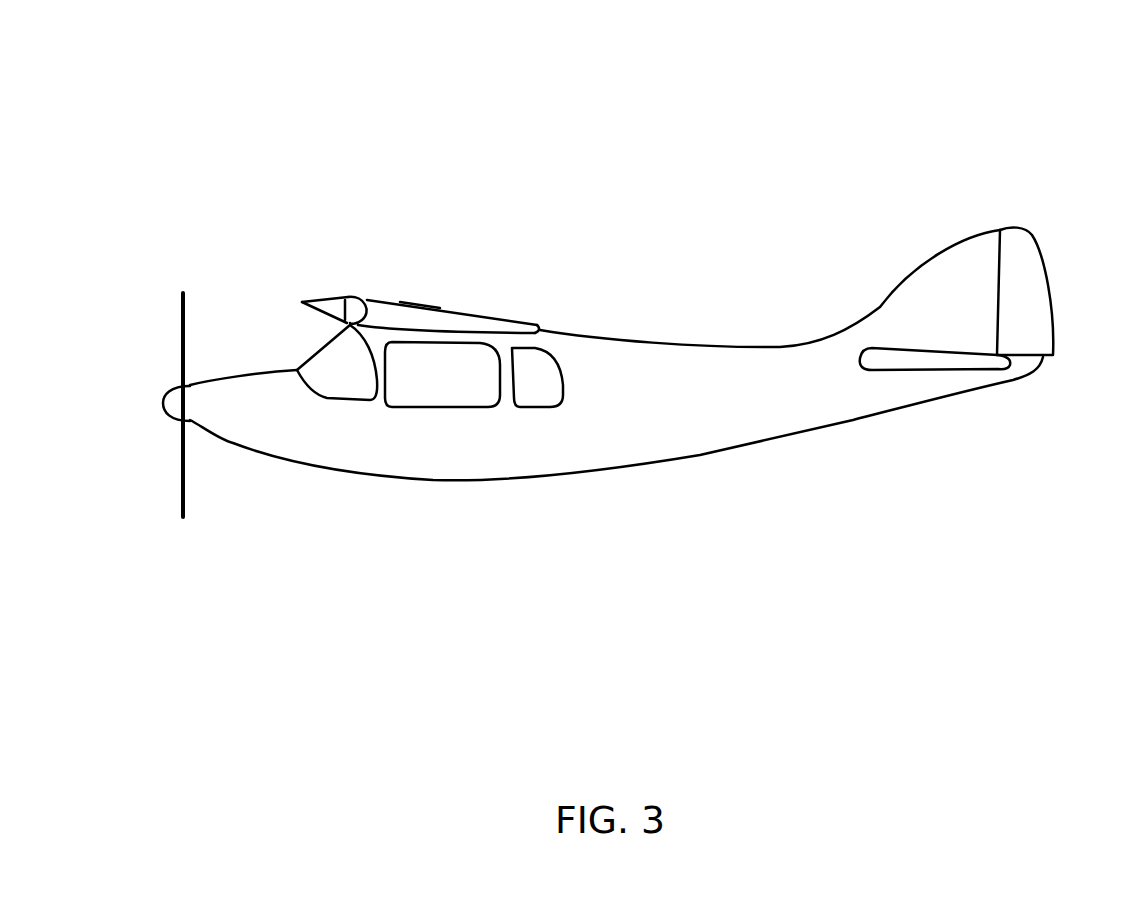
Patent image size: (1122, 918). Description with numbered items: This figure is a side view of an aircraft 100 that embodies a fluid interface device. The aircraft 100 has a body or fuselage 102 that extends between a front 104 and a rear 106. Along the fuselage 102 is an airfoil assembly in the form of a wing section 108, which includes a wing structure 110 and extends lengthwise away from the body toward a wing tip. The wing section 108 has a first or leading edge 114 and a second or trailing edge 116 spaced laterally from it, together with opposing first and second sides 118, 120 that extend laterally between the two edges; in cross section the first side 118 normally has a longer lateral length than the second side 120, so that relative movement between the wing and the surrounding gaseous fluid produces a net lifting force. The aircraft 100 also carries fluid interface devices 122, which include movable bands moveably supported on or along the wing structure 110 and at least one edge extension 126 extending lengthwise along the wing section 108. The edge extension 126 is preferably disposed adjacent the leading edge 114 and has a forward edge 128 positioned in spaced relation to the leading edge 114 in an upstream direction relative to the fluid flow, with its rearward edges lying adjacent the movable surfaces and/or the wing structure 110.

The aircraft 100 is at (623, 103).
The fuselage 102 is at (662, 343).
The front 104 is at (235, 227).
The rear 106 is at (1078, 223).
The wing section 108 is at (463, 273).
The wing structure 110 is at (470, 313).
The leading edge 114 is at (377, 303).
The trailing edge 116 is at (543, 327).
The first side 118 is at (423, 303).
The second side 120 is at (443, 345).
The fluid interface device 122 is at (350, 287).
The edge extension 126 is at (318, 300).
The forward edge 128 is at (302, 302).